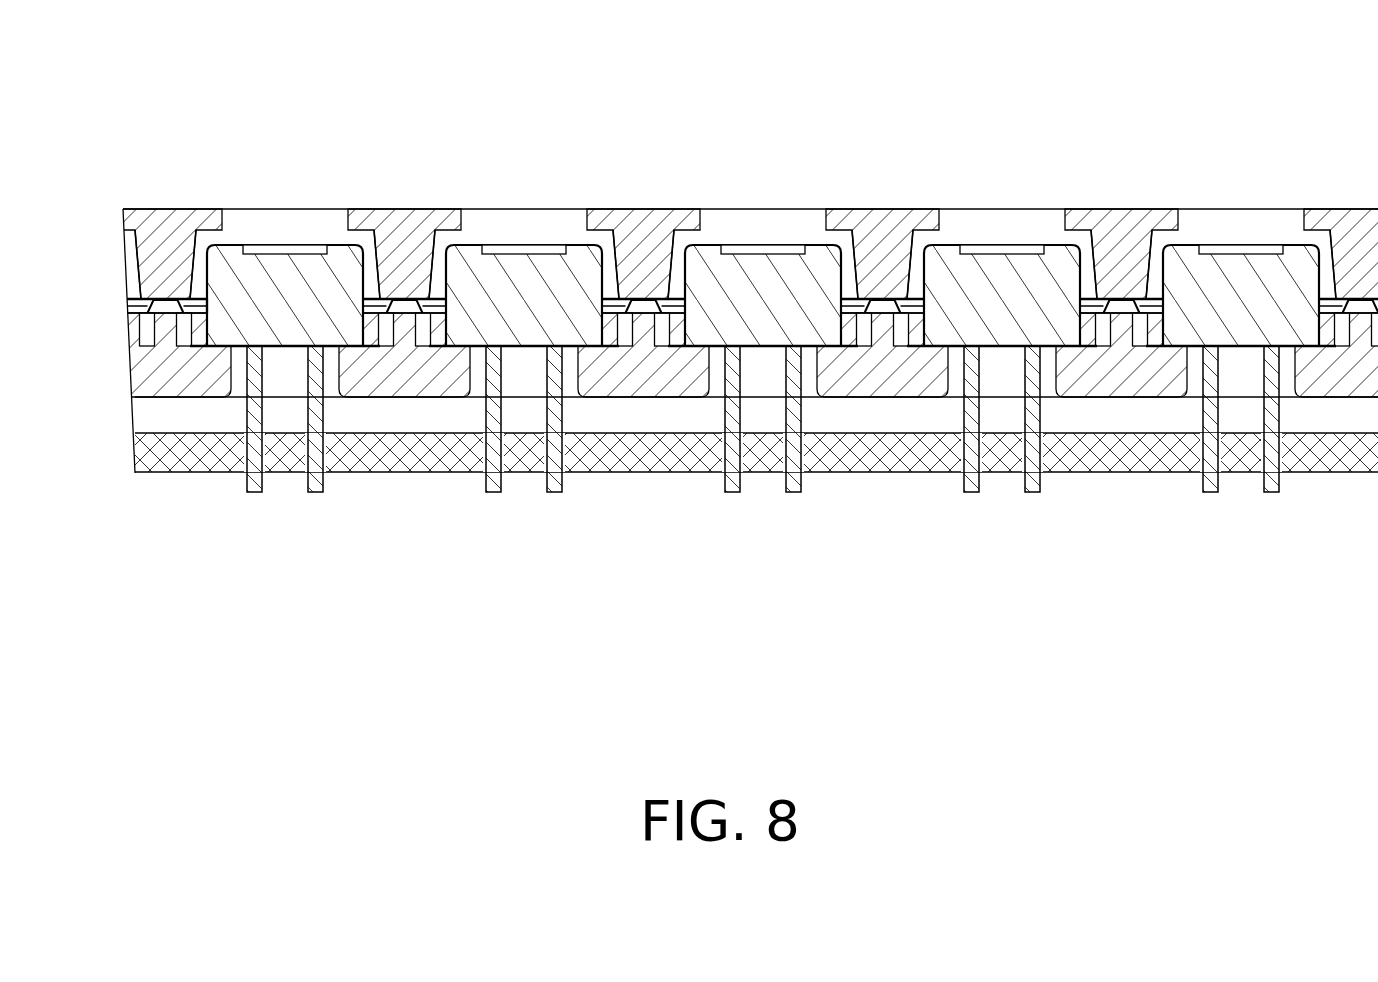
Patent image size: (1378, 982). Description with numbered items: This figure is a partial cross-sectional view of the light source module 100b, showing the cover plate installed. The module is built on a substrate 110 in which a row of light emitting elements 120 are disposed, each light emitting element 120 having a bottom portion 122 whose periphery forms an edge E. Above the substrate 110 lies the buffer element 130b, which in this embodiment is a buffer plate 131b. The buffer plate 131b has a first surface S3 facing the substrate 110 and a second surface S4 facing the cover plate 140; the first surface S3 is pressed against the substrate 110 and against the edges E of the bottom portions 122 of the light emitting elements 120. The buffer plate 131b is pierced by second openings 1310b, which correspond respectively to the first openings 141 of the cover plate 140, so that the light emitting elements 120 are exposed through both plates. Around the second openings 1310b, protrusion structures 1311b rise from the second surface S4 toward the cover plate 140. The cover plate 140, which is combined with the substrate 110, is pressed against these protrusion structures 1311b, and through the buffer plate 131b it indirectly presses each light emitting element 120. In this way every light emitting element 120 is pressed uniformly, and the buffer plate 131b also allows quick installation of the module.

The light source module 100b is at (704, 309).
The substrate 110 is at (150, 368).
The light emitting element 120 is at (763, 231).
The bottom portion 122 is at (805, 330).
The buffer element 130b is at (756, 190).
The buffer plate 131b is at (756, 190).
The second opening 1310b is at (200, 231).
The protrusion structure 1311b is at (381, 299).
The cover plate 140 is at (150, 259).
The first opening 141 is at (532, 198).
The first surface S3 is at (137, 312).
The second surface S4 is at (137, 300).
The edge E is at (204, 313).